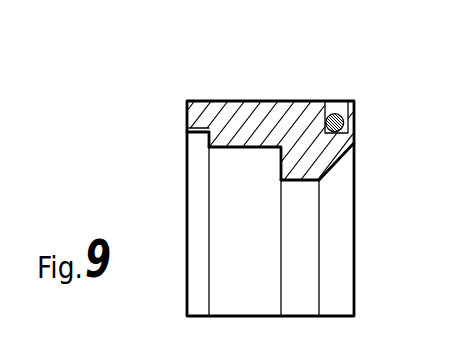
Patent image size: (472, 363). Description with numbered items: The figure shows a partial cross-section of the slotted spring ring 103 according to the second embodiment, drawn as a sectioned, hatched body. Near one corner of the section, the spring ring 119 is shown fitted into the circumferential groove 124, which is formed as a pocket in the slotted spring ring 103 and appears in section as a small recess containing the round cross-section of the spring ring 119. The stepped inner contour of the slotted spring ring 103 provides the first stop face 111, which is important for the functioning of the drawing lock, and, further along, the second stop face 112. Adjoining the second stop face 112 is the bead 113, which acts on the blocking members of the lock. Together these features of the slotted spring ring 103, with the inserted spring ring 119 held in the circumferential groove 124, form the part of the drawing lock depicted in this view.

The slotted spring ring 103 is at (284, 115).
The first stop face 111 is at (209, 137).
The second stop face 112 is at (277, 162).
The bead 113 is at (308, 160).
The spring ring 119 is at (336, 113).
The circumferential groove 124 is at (350, 121).